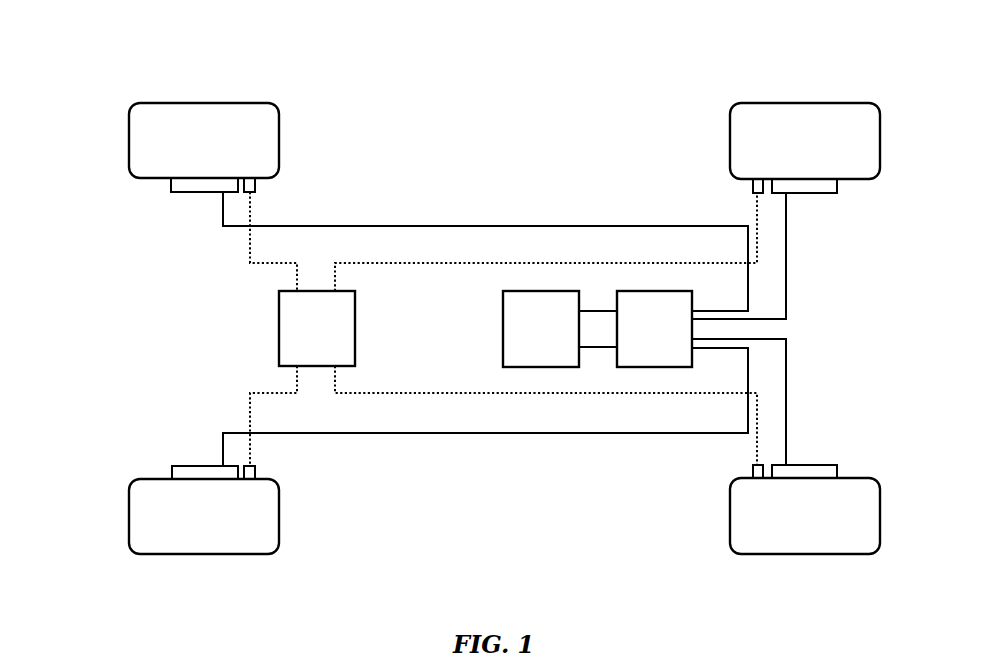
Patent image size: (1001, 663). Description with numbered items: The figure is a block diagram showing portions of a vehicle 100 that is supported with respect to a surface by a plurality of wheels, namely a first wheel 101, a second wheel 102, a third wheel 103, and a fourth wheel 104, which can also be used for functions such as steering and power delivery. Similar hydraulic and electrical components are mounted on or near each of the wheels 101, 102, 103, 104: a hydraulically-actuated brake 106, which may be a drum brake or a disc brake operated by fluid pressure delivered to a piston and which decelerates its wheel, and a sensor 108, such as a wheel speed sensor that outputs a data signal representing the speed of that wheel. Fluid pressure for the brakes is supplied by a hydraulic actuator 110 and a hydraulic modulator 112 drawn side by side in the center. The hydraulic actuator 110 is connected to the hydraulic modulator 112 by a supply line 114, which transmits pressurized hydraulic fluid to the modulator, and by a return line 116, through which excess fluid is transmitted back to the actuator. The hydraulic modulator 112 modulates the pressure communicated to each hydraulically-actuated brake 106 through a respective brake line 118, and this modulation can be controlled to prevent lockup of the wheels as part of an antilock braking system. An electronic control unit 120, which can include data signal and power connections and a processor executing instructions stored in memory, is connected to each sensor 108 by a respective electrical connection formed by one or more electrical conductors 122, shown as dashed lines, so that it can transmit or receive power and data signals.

The vehicle 100 is at (118, 50).
The first wheel 101 is at (250, 103).
The second wheel 102 is at (855, 103).
The third wheel 103 is at (250, 554).
The fourth wheel 104 is at (855, 554).
The hydraulically-actuated brake 106 is at (180, 193).
The sensor 108 is at (256, 181).
The hydraulic actuator 110 is at (541, 329).
The hydraulic modulator 112 is at (654, 329).
The supply line 114 is at (598, 311).
The return line 116 is at (598, 348).
The brake line 118 is at (522, 226).
The electronic control unit 120 is at (317, 328).
The electrical conductor 122 is at (250, 247).